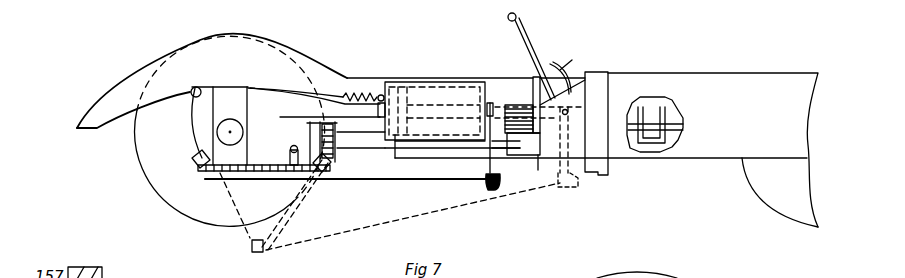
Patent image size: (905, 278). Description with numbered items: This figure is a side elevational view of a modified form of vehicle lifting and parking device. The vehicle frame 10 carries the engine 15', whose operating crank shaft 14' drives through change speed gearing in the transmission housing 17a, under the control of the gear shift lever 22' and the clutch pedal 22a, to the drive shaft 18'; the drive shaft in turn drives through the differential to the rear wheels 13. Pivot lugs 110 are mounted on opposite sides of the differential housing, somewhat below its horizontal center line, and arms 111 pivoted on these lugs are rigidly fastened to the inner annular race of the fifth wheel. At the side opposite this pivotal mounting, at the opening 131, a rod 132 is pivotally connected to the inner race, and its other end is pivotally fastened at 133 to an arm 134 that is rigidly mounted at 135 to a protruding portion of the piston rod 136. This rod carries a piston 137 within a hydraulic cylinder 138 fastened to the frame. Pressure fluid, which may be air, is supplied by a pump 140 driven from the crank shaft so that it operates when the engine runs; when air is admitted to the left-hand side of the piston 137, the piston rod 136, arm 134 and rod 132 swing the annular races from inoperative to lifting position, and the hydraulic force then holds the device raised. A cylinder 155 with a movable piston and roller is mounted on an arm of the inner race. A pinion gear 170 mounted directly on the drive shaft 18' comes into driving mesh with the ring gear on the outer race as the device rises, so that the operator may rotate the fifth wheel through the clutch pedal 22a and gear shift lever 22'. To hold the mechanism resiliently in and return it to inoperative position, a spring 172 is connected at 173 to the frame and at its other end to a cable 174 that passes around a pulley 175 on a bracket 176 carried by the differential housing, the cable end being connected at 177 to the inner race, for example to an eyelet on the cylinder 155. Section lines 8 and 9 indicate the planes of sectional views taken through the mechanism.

The frame 10 is at (90, 120).
The rear wheels 13 is at (320, 157).
The operating crank shaft 14' is at (658, 172).
The engine 15' is at (713, 160).
The transmission housing 17a is at (583, 118).
The drive shaft 18' is at (512, 194).
The gear shift lever 22' is at (540, 94).
The clutch pedal 22a is at (587, 140).
The pivot lugs 110 is at (297, 146).
The arms 111 is at (292, 150).
The opening 131 is at (210, 178).
The rod 132 is at (390, 181).
The pivotal connection 133 is at (497, 190).
The arm 134 is at (490, 172).
The rigid mounting 135 is at (490, 103).
The piston rod 136 is at (445, 113).
The piston 137 is at (405, 141).
The hydraulic cylinder 138 is at (448, 148).
The pump 140 is at (530, 143).
The cylinder 155 is at (193, 152).
The pinion gear 170 is at (327, 125).
The spring 172 is at (367, 93).
The spring connection 173 is at (381, 97).
The cable 174 is at (332, 92).
The pulley 175 is at (195, 90).
The bracket 176 is at (201, 87).
The cable connection 177 is at (198, 164).
The section line 8- 8 is at (262, 231).
The section line 9- 9 is at (277, 265).